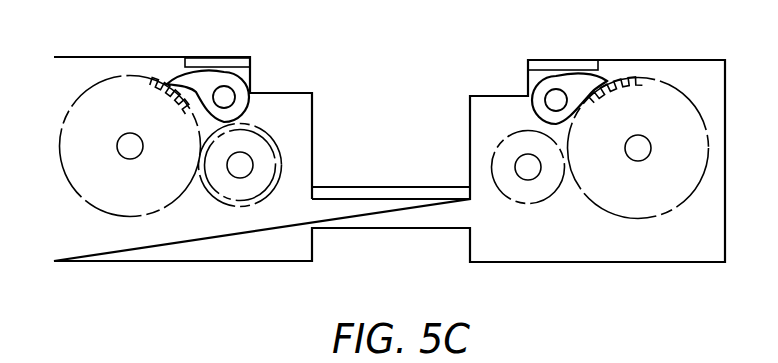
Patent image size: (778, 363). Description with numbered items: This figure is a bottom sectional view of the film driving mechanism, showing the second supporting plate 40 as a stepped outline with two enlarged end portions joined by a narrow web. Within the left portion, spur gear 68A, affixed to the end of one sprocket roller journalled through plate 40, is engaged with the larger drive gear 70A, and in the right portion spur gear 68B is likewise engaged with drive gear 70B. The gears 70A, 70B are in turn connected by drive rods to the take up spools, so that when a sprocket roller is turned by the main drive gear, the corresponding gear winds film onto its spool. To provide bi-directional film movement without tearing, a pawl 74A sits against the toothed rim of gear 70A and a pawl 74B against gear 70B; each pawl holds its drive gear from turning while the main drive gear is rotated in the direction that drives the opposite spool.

The second supporting plate 40 is at (54, 218).
The gear 70A is at (110, 93).
The gear 70B is at (648, 97).
The pawl 74A is at (233, 92).
The pawl 74B is at (543, 97).
The spur gear 68A is at (236, 184).
The spur gear 68B is at (543, 190).